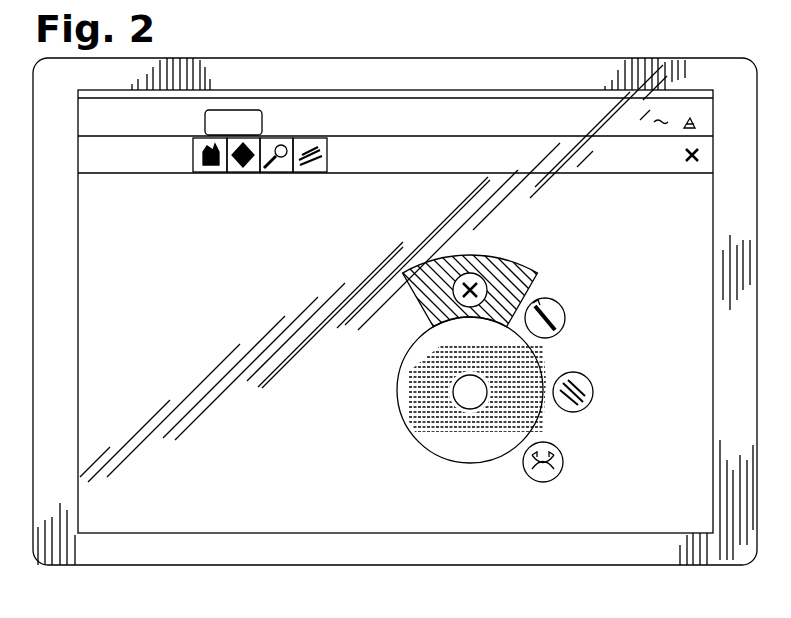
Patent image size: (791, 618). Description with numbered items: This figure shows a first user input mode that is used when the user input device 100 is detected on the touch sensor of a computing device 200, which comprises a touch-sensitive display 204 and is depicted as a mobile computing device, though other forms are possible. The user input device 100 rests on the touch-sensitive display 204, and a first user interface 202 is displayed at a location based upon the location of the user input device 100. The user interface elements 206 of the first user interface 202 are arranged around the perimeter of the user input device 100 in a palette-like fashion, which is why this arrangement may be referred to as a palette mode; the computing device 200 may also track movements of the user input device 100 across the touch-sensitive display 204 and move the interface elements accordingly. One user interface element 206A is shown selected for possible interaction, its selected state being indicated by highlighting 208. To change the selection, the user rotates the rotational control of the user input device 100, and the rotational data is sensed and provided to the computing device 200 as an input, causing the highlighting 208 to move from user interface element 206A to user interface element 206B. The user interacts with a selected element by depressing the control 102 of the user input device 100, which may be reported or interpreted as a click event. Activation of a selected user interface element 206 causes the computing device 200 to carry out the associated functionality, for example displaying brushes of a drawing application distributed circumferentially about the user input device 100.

The computing device 200 is at (706, 57).
The first user interface 202 is at (525, 318).
The touch-sensitive display 204 is at (395, 299).
The user interface elements 206 is at (609, 378).
The user interface element 206A is at (416, 298).
The user interface element 206B is at (548, 298).
The highlighting 208 is at (510, 266).
The user input device 100 is at (436, 406).
The control 102 is at (470, 463).